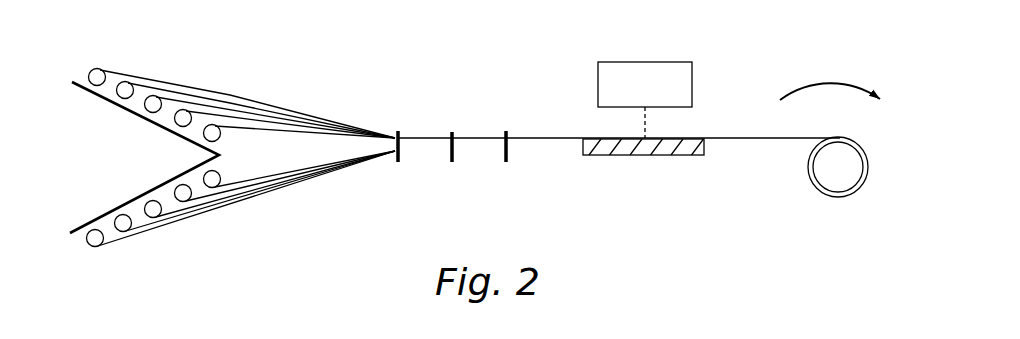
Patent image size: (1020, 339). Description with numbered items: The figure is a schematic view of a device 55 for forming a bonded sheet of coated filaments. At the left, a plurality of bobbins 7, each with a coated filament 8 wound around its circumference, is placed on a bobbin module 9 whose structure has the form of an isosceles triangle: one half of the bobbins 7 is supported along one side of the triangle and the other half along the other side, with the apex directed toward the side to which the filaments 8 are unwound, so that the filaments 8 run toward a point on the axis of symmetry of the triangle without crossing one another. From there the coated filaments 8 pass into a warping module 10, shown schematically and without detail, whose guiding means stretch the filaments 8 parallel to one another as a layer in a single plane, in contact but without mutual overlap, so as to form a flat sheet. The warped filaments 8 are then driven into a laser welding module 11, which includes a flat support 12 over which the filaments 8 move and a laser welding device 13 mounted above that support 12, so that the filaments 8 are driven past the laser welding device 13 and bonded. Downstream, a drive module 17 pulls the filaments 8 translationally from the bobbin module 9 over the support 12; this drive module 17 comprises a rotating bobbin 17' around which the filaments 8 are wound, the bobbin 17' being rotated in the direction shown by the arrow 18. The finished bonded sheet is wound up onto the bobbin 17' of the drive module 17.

The bobbin 7 is at (178, 214).
The coated filament 8 is at (275, 177).
The bobbin module 9 is at (155, 69).
The warping module 10 is at (518, 170).
The laser welding module 11 is at (612, 201).
The flat support 12 is at (663, 150).
The laser welding device 13 is at (668, 72).
The drive module 17 is at (819, 207).
The rotating bobbin 17' is at (888, 214).
The arrow 18 is at (833, 84).
The device for forming a bonded sheet of coated filaments 55 is at (521, 77).